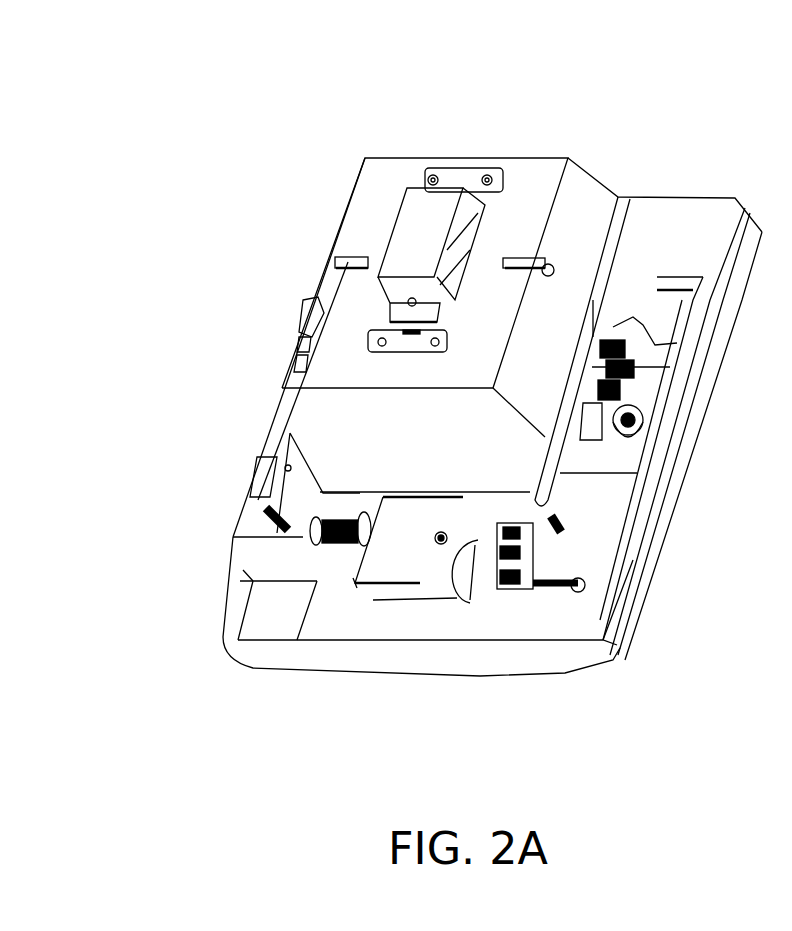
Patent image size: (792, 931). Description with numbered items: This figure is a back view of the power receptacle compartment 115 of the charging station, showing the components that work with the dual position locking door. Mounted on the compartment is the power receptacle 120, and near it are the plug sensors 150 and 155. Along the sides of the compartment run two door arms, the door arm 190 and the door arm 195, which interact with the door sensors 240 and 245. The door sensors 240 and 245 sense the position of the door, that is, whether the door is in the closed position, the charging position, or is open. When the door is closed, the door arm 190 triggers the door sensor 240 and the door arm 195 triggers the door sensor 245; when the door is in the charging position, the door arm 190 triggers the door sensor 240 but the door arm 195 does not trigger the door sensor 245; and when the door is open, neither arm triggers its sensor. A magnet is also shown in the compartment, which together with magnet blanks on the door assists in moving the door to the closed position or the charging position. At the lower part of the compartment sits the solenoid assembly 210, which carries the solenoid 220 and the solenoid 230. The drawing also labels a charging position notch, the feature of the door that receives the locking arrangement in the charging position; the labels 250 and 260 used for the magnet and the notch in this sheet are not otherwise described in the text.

The power receptacle compartment 115 is at (505, 157).
The power receptacle 120 is at (412, 196).
The plug sensor 150 is at (545, 268).
The plug sensor 155 is at (337, 258).
The door arm 190 is at (567, 440).
The door arm 195 is at (270, 426).
The solenoid assembly 210 is at (375, 565).
The solenoid 220 is at (345, 543).
The solenoid 230 is at (492, 577).
The door sensor 240 is at (603, 390).
The door sensor 245 is at (300, 320).
The magnet 250 is at (642, 425).
The charging position notch 260 is at (752, 645).